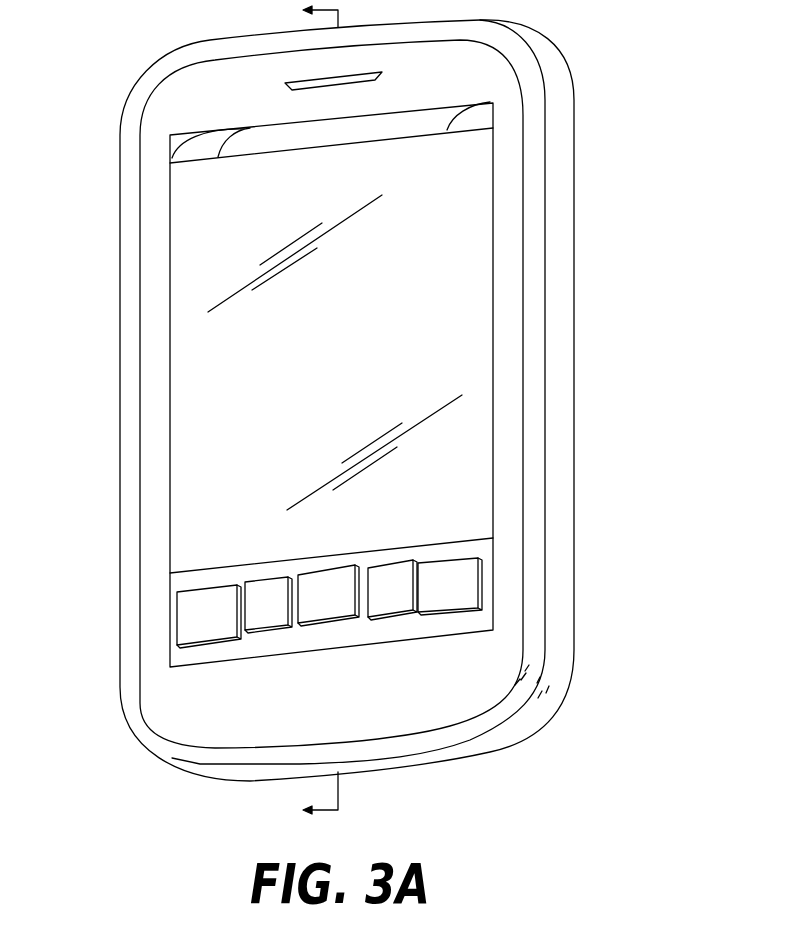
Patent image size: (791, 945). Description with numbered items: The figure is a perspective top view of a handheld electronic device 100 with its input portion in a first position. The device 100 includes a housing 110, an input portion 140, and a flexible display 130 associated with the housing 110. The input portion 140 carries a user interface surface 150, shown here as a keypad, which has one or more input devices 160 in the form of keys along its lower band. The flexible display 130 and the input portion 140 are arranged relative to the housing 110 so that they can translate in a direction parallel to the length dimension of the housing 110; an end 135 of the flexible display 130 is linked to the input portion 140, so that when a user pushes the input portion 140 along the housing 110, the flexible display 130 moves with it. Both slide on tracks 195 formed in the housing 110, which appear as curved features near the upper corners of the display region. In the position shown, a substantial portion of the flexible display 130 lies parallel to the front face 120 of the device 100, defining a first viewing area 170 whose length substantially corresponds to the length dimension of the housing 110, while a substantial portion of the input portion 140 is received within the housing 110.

The handheld electronic device 100 is at (363, 413).
The housing 110 is at (574, 347).
The front face 120 is at (449, 87).
The flexible display 130 is at (170, 393).
The end 135 is at (470, 540).
The input portion 140 is at (339, 603).
The user interface surface 150 is at (134, 607).
The input devices 160 is at (187, 630).
The first viewing area 170 is at (338, 369).
The tracks 195 is at (225, 153).